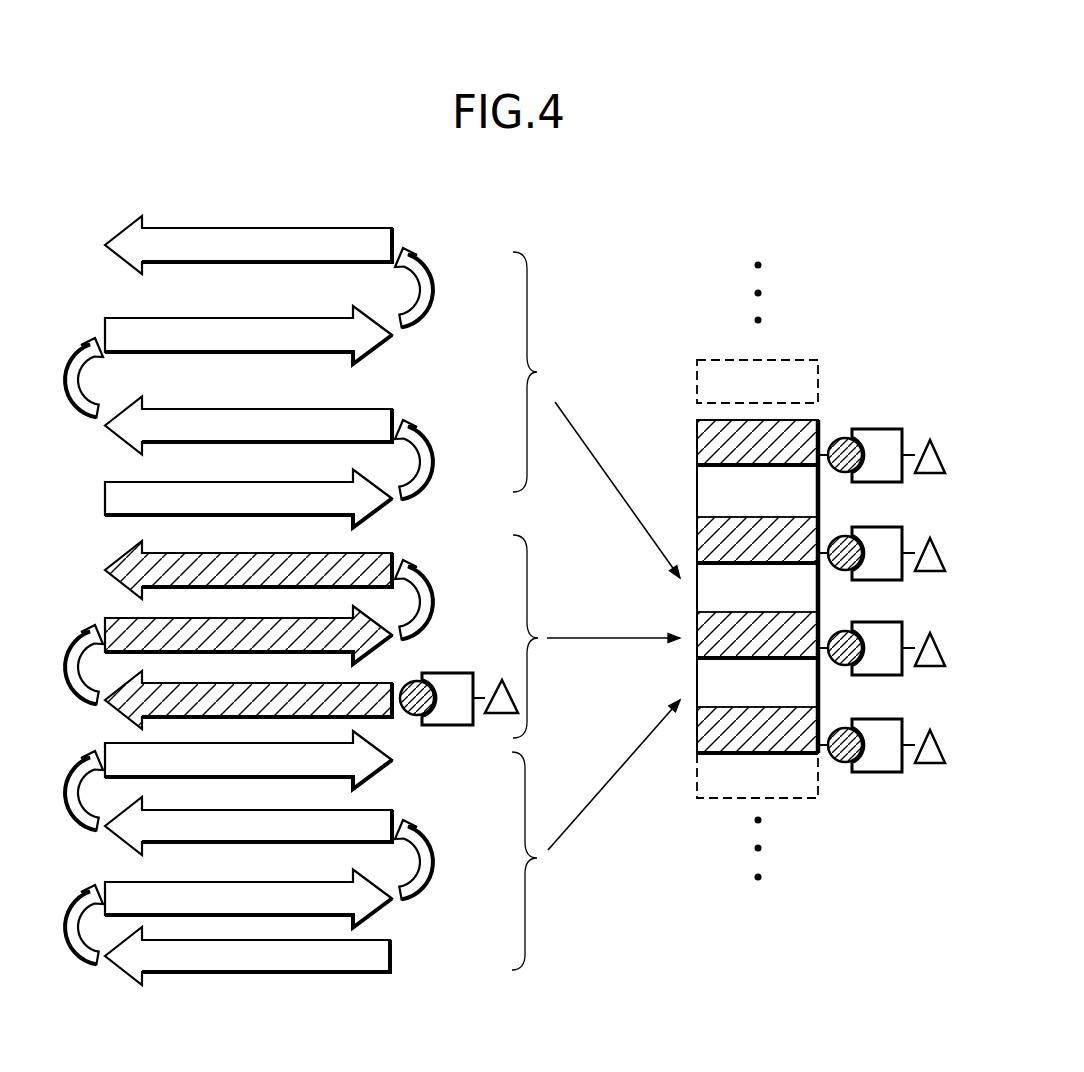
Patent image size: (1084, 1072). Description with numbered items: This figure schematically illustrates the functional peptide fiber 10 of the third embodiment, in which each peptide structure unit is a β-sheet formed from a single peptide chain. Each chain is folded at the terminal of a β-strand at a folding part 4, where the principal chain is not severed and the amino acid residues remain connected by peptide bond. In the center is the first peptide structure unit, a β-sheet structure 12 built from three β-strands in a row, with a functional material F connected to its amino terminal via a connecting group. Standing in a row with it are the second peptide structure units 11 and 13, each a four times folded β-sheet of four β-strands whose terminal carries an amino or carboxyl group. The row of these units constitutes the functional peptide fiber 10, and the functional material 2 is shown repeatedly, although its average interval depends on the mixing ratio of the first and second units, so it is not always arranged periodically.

The folding part 4 is at (430, 252).
The second peptide structure unit 11 is at (324, 362).
The first peptide structure unit 12 is at (538, 647).
The second peptide structure unit 13 is at (535, 872).
The functional material 2 is at (457, 673).
The functional material F is at (503, 683).
The functional peptide fiber 10 is at (822, 348).